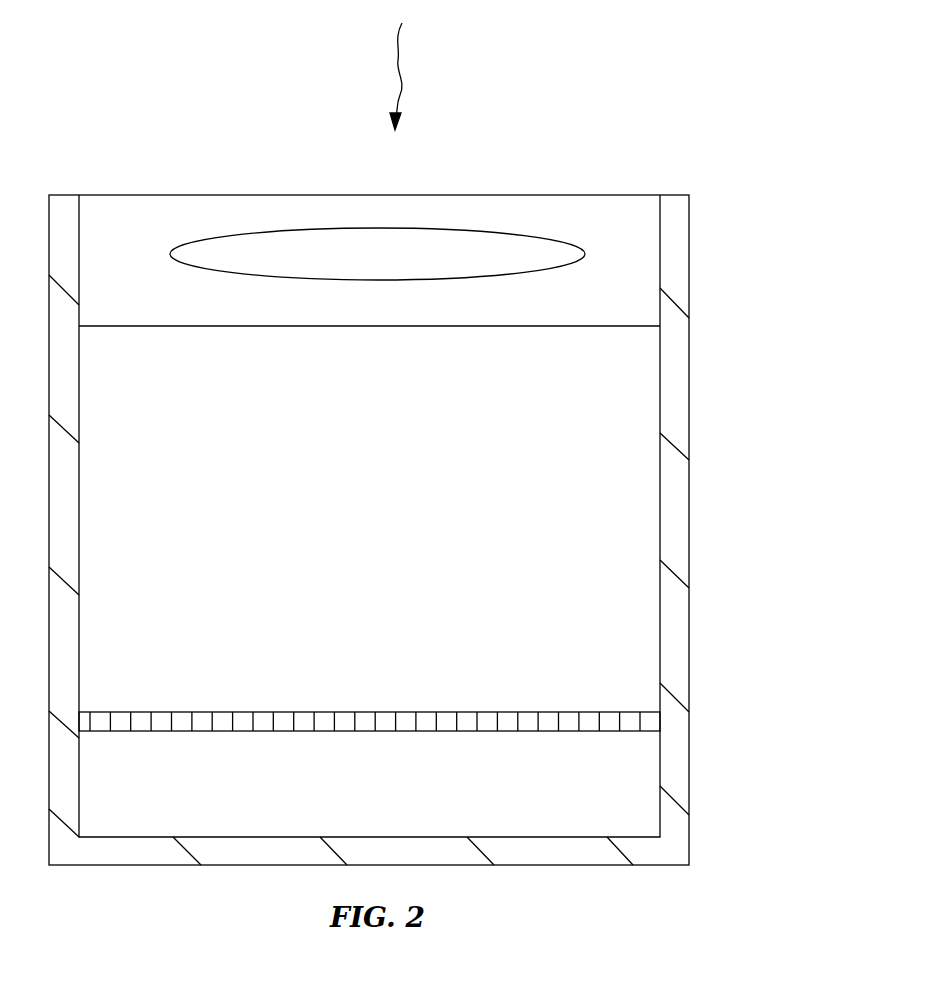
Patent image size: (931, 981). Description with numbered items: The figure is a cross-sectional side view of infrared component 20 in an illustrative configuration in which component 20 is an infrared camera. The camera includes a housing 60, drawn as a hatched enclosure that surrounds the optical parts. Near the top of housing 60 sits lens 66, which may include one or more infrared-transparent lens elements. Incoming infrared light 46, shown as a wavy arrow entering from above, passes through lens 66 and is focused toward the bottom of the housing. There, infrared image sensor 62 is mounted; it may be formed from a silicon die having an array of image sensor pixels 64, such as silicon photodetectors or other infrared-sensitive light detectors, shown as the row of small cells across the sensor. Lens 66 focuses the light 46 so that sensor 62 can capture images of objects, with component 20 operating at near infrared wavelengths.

The infrared component 20 is at (442, 497).
The incoming infrared light 46 is at (400, 68).
The housing 60 is at (678, 517).
The infrared image sensor 62 is at (642, 753).
The image sensor pixels 64 is at (302, 723).
The lens 66 is at (620, 218).